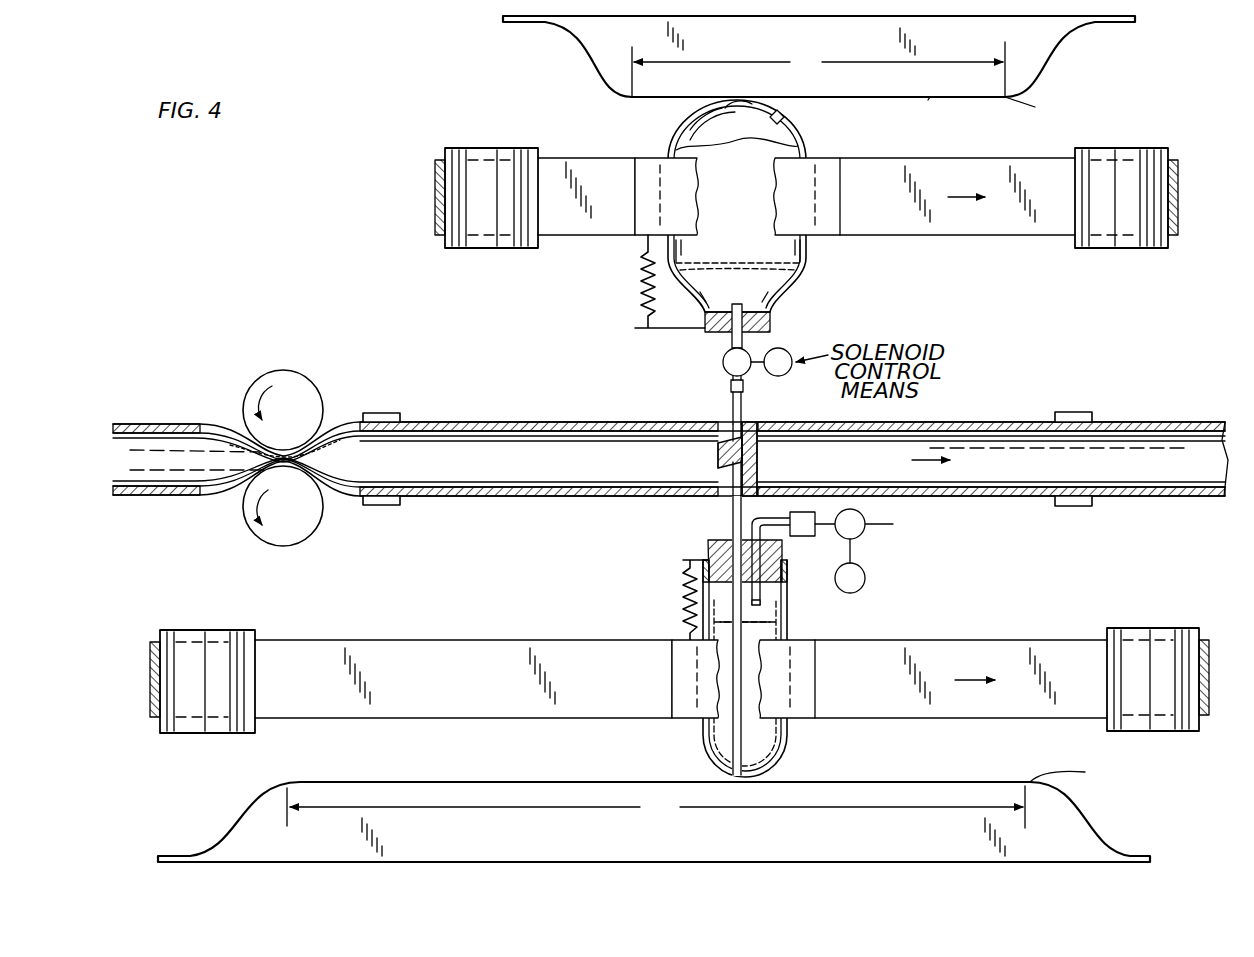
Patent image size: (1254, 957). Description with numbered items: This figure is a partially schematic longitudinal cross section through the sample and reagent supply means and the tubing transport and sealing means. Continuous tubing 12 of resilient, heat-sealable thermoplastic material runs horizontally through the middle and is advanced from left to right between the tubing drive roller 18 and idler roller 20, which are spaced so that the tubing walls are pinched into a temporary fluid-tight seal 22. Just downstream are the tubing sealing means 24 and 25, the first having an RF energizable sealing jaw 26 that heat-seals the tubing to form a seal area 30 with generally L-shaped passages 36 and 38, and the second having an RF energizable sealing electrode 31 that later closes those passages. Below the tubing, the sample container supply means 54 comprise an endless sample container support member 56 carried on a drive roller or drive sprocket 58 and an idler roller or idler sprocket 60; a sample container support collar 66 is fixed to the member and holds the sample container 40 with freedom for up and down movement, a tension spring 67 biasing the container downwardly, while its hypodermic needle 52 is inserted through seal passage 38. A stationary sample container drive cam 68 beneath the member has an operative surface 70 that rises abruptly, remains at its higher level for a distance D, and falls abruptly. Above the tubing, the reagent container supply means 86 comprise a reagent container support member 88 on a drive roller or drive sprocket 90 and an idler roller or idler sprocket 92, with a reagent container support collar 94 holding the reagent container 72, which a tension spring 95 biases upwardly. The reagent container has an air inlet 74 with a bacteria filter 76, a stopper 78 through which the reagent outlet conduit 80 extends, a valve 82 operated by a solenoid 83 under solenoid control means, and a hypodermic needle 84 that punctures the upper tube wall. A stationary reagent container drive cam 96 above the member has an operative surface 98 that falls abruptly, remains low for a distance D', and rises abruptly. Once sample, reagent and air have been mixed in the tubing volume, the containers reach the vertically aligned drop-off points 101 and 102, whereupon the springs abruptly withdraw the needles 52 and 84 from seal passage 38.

The continuous tubing 12 is at (568, 498).
The tubing drive roller 18 is at (295, 538).
The tubing idler roller 20 is at (282, 372).
The temporary fluid-tight seal 22 is at (330, 464).
The tubing sealing means 24 is at (398, 396).
The tubing sealing means 25 is at (1080, 508).
The sealing jaw 26 is at (380, 412).
The seal area 30 is at (760, 461).
The RF energizable sealing electrode 31 is at (1090, 411).
The L-shaped passage 36 is at (718, 471).
The L-shaped passage 38 is at (714, 450).
The sample container 40 is at (703, 757).
The hypodermic needle 52 is at (730, 512).
The sample container supply means 54 is at (681, 657).
The sample container support member 56 is at (463, 679).
The drive roller or drive sprocket 58 is at (236, 628).
The idler roller or idler sprocket 60 is at (1157, 630).
The sample container support collar 66 is at (820, 640).
The tension spring 67 is at (686, 592).
The sample container drive cam 68 is at (654, 822).
The operative surface 70 is at (875, 784).
The reagent container 72 is at (812, 148).
The air inlet 74 is at (765, 117).
The bacteria filter 76 is at (790, 117).
The stopper 78 is at (762, 330).
The reagent outlet conduit 80 is at (728, 385).
The valve 82 is at (720, 362).
The solenoid 83 is at (773, 378).
The hypodermic needle 84 is at (733, 410).
The reagent container supply means 86 is at (806, 225).
The reagent container support member 88 is at (586, 196).
The drive roller or drive sprocket 90 is at (505, 252).
The idler roller or idler sprocket 92 is at (1125, 252).
The reagent container support collar 94 is at (737, 196).
The tension spring 95 is at (643, 290).
The reagent container drive cam 96 is at (819, 56).
The operative surface 98 is at (930, 100).
The abrupt drop-off point 101 is at (1081, 773).
The abrupt drop-off point 102 is at (1040, 107).